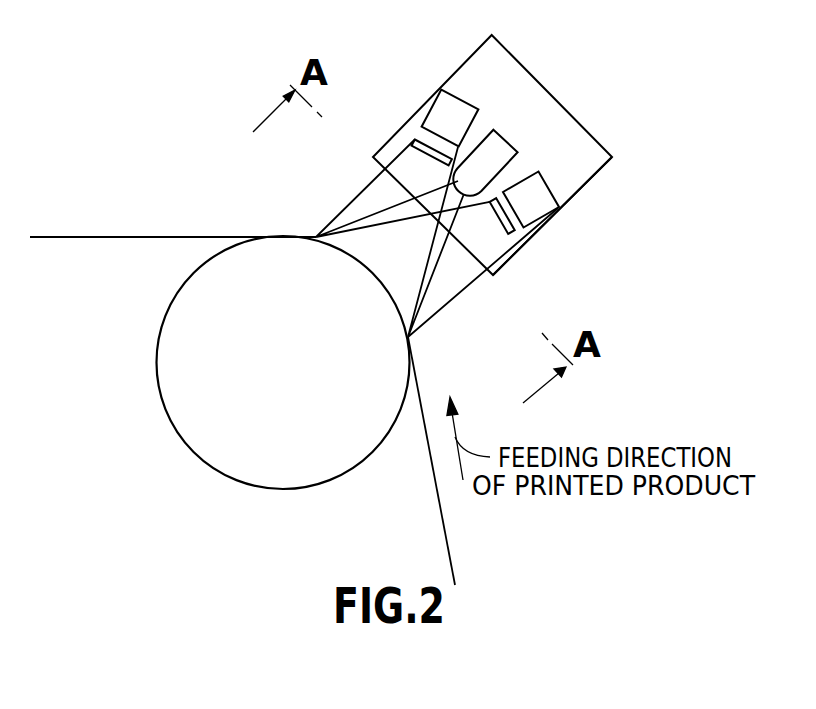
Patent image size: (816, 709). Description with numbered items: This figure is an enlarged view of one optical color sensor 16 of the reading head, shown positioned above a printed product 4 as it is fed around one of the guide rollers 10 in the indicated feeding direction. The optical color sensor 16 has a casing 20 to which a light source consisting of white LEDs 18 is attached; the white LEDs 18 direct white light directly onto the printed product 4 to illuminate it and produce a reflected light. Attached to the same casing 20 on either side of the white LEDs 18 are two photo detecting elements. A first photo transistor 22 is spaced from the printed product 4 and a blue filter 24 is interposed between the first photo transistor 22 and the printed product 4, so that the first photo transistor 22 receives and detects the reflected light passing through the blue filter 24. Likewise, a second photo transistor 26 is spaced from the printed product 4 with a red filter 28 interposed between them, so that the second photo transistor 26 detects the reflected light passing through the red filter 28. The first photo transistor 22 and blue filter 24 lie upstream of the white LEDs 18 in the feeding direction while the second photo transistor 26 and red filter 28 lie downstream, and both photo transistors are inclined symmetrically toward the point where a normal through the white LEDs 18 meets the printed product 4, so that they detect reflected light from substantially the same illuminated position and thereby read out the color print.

The printed product 4 is at (110, 238).
The guide rollers 10 is at (168, 418).
The optical color sensor 16 is at (563, 137).
The white LEDs 18 is at (493, 133).
The casing 20 is at (601, 172).
The first photo transistor 22 is at (541, 196).
The blue filter 24 is at (508, 230).
The second photo transistor 26 is at (453, 97).
The red filter 28 is at (414, 139).